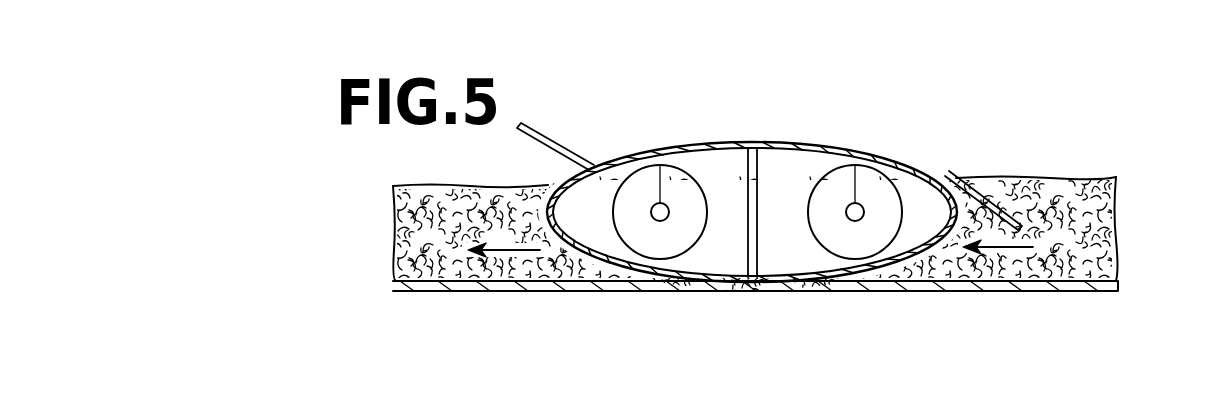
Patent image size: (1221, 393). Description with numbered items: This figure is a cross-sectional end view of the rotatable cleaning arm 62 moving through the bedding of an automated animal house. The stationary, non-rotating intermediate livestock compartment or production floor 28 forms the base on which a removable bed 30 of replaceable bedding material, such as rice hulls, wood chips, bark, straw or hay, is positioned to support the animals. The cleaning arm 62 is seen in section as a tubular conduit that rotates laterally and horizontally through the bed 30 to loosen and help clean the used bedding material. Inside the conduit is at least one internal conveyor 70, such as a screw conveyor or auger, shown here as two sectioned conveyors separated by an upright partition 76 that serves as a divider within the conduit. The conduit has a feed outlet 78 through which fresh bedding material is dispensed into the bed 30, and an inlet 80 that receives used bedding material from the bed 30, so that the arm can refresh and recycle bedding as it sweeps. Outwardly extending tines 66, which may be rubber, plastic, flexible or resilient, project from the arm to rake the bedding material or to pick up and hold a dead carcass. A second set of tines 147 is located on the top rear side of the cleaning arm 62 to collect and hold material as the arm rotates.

The intermediate livestock compartment 28 is at (1116, 277).
The removable bed 30 is at (410, 213).
The rotatable cleaning arm 62 is at (841, 274).
The outwardly extending tines 66 is at (998, 210).
The internal conveyor 70 is at (667, 200).
The partition 76 is at (760, 192).
The feed outlet 78 is at (607, 190).
The inlet 80 is at (903, 185).
The second set of tines 147 is at (540, 132).